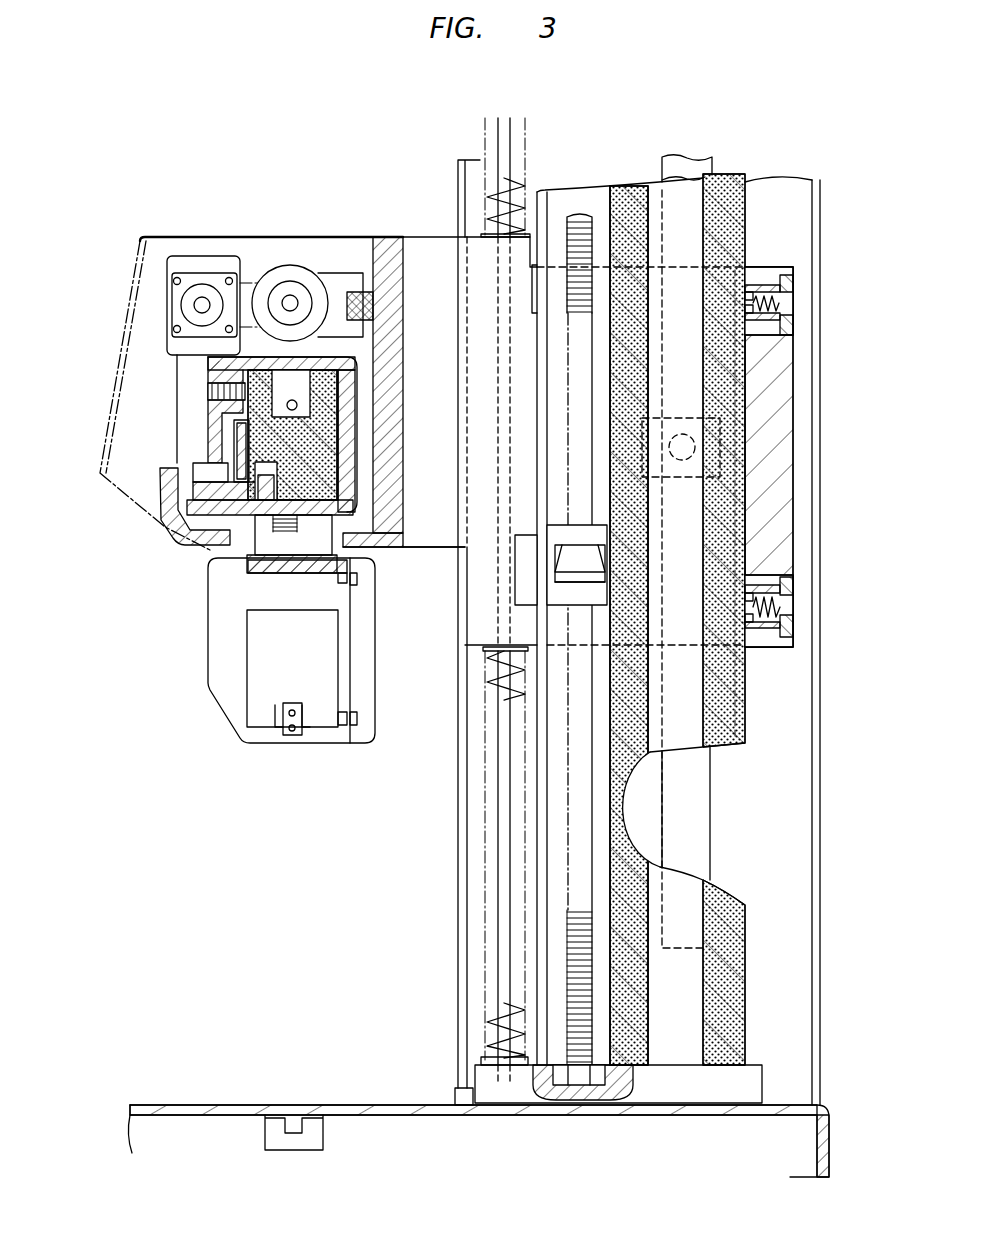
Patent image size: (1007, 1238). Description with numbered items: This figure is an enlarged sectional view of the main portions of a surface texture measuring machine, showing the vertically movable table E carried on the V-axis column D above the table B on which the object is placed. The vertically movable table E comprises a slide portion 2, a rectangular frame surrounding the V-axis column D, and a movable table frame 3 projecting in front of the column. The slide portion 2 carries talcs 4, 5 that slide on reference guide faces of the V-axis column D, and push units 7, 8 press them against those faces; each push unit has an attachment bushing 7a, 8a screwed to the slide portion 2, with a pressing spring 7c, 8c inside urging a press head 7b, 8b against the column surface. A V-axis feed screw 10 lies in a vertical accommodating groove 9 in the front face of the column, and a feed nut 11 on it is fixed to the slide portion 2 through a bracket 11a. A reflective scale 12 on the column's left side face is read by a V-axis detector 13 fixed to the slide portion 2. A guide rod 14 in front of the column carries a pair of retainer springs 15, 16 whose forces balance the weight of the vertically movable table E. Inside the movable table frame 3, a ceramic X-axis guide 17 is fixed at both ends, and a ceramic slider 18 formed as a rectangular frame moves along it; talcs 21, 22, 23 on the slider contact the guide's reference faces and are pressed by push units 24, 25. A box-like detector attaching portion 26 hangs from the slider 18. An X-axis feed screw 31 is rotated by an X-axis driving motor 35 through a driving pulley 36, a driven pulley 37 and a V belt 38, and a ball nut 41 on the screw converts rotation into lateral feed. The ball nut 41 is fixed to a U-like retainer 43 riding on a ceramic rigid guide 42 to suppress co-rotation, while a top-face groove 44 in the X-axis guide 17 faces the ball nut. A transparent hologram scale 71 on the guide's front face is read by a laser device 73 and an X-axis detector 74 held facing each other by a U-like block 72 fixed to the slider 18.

The slide portion 2 is at (783, 394).
The movable table frame 3 is at (378, 240).
The talc 4 is at (532, 290).
The talc 5 is at (535, 622).
The push unit 7 is at (815, 269).
The attachment bushing 7a is at (785, 320).
The press head 7b is at (775, 285).
The pressing spring 7c is at (785, 303).
The push unit 8 is at (819, 584).
The attachment bushing 8a is at (785, 625).
The press head 8b is at (775, 588).
The pressing spring 8c is at (785, 606).
The vertical accommodating groove 9 is at (557, 785).
The V-axis feed screw 10 is at (567, 847).
The feed nut 11 is at (578, 525).
The bracket 11a is at (522, 550).
The reflective scale 12 is at (698, 795).
The V-axis detector 13 is at (722, 437).
The guide rod 14 is at (502, 944).
The retainer spring 15 is at (518, 135).
The retainer spring 16 is at (483, 979).
The X-axis guide 17 is at (333, 455).
The slider 18 is at (207, 422).
The talc 21 is at (182, 343).
The talc 22 is at (350, 364).
The talc 23 is at (345, 385).
The push unit 24 is at (207, 392).
The push unit 25 is at (270, 538).
The detector attaching portion 26 is at (283, 592).
The X-axis feed screw 31 is at (288, 300).
The X-axis driving motor 35 is at (178, 264).
The driving pulley 36 is at (180, 302).
The driven pulley 37 is at (290, 265).
The V belt 38 is at (187, 277).
The ball nut 41 is at (259, 290).
The rigid guide 42 is at (362, 308).
The U-like retainer 43 is at (345, 278).
The top-face groove 44 is at (230, 440).
The transparent hologram scale 71 is at (255, 465).
The U-like block 72 is at (215, 535).
The laser device 73 is at (200, 505).
The X-axis detector 74 is at (345, 530).
The table B is at (187, 1105).
The V-axis column D is at (727, 970).
The vertically movable table E is at (478, 248).